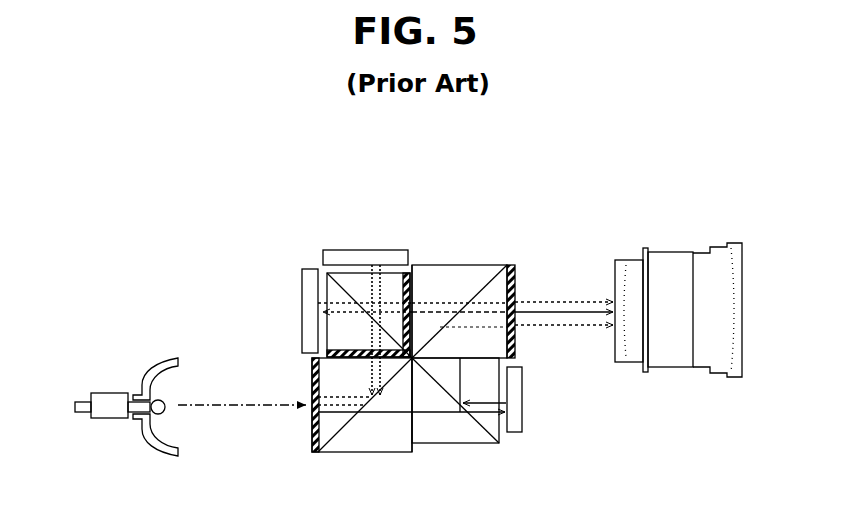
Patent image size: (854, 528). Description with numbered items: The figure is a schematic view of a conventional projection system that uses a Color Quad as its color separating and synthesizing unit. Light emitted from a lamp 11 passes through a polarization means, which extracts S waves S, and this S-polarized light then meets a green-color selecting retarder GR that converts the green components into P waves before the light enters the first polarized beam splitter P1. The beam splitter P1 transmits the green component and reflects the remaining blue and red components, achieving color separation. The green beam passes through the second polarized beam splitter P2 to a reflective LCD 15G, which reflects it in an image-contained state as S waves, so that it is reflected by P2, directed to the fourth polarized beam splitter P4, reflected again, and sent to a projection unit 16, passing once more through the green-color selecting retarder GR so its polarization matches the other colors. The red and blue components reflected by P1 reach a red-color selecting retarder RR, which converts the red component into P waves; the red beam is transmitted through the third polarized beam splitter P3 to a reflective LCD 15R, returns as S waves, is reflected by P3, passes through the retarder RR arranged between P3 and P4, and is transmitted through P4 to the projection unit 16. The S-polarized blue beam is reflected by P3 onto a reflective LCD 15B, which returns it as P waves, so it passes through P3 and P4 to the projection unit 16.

The lamp 11 is at (134, 385).
The S waves S is at (242, 393).
The reflective LCD 15B is at (301, 306).
The reflective LCD 15R is at (348, 250).
The red-color selecting retarder RR is at (410, 355).
The polarized beam splitter P1 is at (362, 405).
The polarized beam splitter P2 is at (459, 400).
The polarized beam splitter P3 is at (365, 315).
The polarized beam splitter P4 is at (459, 311).
The green-color selecting retarder GR is at (515, 275).
The reflective LCD 15G is at (527, 400).
The projection unit 16 is at (682, 252).